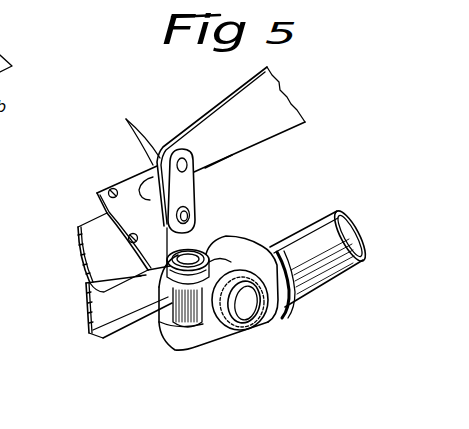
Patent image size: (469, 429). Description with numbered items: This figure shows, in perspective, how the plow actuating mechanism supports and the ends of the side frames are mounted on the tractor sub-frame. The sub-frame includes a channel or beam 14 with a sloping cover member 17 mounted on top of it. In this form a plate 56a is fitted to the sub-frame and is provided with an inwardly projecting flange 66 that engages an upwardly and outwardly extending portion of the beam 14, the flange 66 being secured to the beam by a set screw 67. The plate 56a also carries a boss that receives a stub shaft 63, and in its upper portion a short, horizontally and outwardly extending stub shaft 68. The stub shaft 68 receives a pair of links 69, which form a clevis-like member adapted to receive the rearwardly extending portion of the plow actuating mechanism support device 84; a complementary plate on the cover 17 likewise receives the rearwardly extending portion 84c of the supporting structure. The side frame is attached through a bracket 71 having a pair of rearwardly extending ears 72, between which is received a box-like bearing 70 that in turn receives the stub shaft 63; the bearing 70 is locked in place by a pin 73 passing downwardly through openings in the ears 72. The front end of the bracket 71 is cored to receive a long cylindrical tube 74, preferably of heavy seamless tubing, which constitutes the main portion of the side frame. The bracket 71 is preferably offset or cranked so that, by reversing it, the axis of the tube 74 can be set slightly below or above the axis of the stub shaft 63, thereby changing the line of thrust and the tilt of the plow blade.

The plow actuating mechanism support device 84 is at (311, 148).
The rearwardly extending portion of plow actuating means supporting structure 84c is at (217, 152).
The links 69 is at (126, 120).
The stub shaft 68 is at (152, 175).
The cover member 17 is at (96, 224).
The plate 56a is at (127, 215).
The channel 14 is at (97, 308).
The set screw 67 is at (94, 326).
The flange 66 is at (142, 277).
The stub shaft 63 is at (190, 349).
The pin 73 is at (190, 256).
The ears 72 is at (219, 267).
The box-like bearing 70 is at (263, 306).
The bracket 71 is at (292, 310).
The tube 74 is at (325, 280).